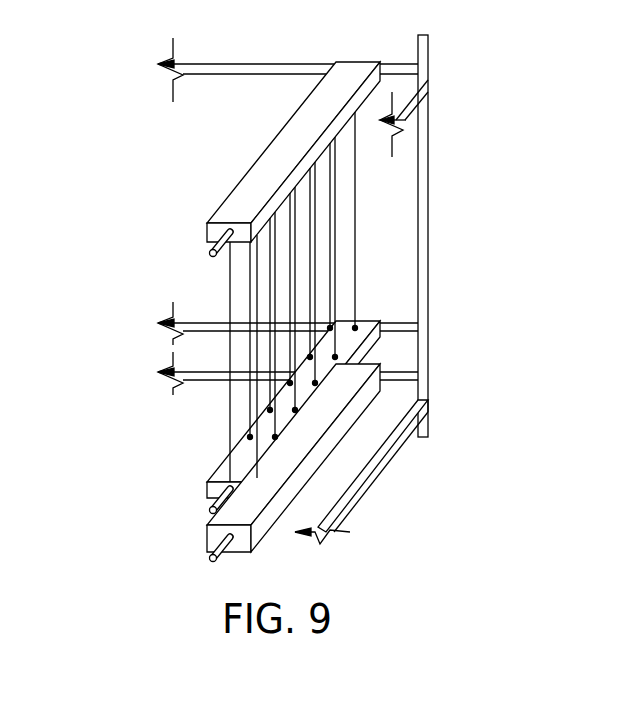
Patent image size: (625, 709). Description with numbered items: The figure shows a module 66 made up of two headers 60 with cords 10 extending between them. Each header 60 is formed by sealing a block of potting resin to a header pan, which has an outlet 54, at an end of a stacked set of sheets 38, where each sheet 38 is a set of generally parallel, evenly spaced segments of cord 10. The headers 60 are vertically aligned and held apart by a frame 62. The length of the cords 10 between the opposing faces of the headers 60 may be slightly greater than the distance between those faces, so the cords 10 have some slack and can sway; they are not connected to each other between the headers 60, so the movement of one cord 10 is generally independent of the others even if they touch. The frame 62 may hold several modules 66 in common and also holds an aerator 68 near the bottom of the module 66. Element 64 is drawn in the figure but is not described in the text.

The cord 10 is at (230, 282).
The sheet 38 is at (229, 410).
The outlet 54 is at (211, 250).
The header 60 is at (220, 206).
The frame 62 is at (430, 118).
The ramp / support board 64 is at (327, 447).
The module 66 is at (88, 326).
The aerator 68 is at (258, 532).